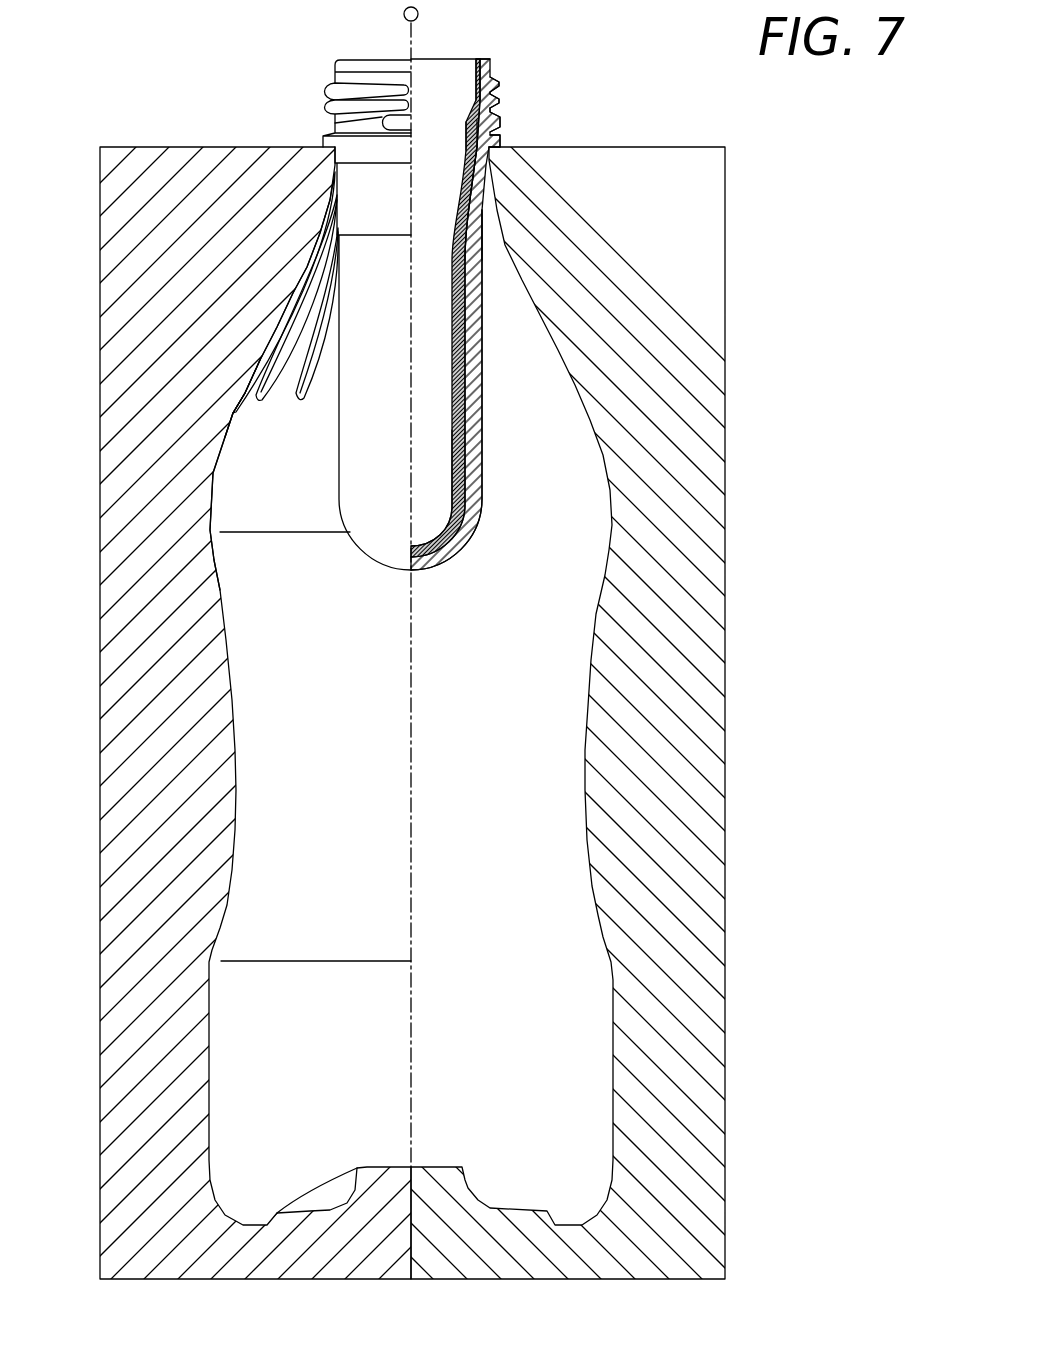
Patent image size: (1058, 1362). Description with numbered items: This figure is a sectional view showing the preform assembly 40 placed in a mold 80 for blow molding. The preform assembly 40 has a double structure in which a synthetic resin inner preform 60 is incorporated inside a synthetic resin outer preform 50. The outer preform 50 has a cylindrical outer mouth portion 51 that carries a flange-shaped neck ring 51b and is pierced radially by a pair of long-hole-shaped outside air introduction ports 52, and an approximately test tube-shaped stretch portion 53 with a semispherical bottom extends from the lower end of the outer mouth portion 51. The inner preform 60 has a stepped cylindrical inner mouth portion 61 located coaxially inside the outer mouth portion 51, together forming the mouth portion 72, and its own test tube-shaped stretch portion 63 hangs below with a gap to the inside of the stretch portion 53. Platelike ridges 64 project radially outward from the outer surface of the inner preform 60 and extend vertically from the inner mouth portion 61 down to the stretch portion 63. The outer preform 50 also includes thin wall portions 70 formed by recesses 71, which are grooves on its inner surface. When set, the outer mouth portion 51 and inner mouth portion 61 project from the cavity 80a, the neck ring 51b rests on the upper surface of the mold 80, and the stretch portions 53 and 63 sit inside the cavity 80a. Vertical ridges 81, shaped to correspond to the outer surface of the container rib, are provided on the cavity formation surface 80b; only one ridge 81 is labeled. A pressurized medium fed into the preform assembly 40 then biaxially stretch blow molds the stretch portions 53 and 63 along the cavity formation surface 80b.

The preform assembly 40 is at (479, 299).
The outer preform 50 is at (502, 314).
The outer mouth portion 51 is at (497, 116).
The neck ring 51b is at (499, 135).
The outside air introduction port 52 is at (378, 118).
The stretch portion 53 is at (486, 448).
The inner preform 60 is at (423, 308).
The inner mouth portion 61 is at (475, 80).
The stretch portion 63 is at (452, 456).
The ridge 64 is at (470, 142).
The thin wall portion 70 is at (484, 206).
The recess 71 is at (479, 246).
The mouth portion 72 is at (504, 96).
The mold 80 is at (183, 146).
The cavity 80a is at (216, 457).
The cavity formation surface 80b is at (227, 435).
The ridge 81 is at (278, 372).